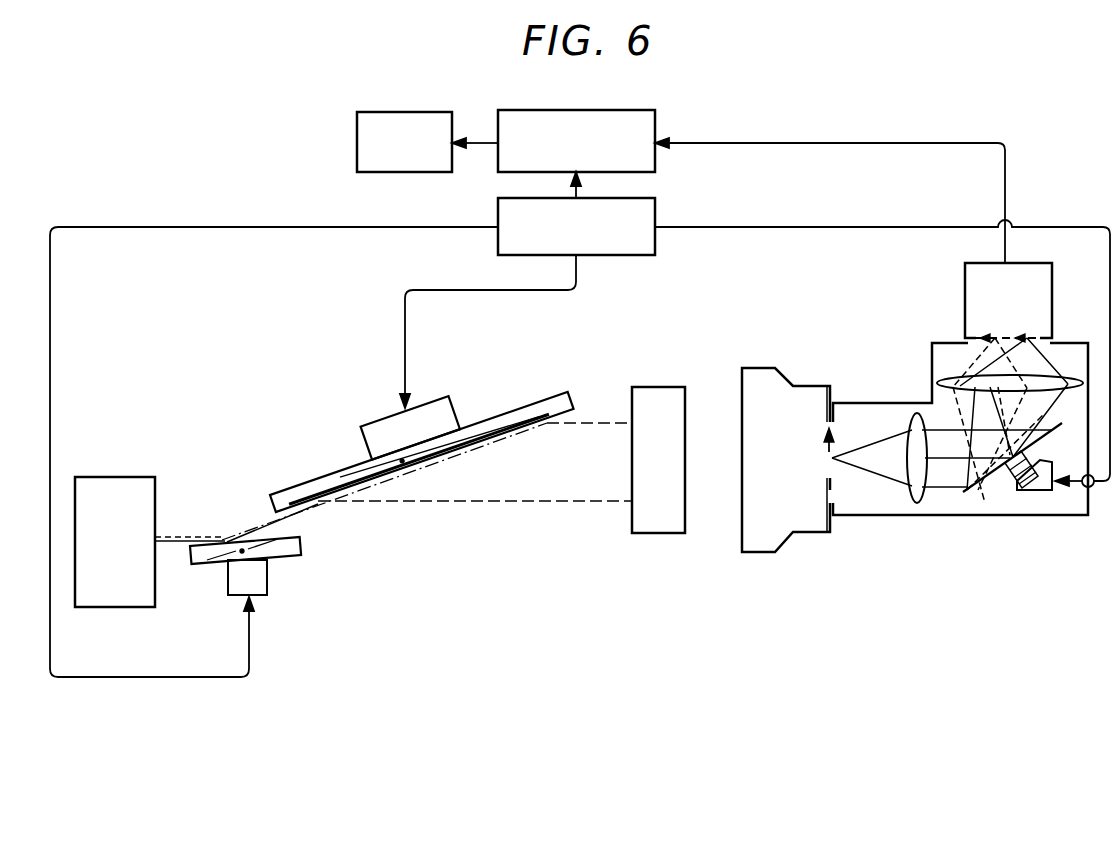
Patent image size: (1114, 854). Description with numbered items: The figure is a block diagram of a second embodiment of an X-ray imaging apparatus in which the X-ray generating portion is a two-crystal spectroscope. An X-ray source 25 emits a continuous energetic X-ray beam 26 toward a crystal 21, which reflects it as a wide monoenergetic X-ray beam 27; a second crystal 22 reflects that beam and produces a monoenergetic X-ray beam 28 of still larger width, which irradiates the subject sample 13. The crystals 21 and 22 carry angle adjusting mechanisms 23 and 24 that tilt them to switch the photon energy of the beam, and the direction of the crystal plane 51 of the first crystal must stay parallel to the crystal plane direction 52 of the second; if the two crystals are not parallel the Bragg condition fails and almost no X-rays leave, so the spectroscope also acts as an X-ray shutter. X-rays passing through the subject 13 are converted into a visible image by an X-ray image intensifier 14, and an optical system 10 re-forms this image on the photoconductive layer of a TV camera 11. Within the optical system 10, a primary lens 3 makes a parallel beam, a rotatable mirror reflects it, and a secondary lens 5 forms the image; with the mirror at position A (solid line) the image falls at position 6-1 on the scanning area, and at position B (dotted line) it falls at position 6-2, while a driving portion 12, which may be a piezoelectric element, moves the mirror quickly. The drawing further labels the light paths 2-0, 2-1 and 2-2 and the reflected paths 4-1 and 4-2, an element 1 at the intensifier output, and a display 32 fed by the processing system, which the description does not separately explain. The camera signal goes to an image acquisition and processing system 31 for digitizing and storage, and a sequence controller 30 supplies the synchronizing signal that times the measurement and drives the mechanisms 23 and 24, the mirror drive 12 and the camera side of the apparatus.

The slit / aperture 1 is at (831, 479).
The light beam entrance path 2-0 is at (865, 442).
The light beam path (first position) 2-1 is at (1052, 368).
The light beam path (second position) 2-2 is at (967, 368).
The primary lens 3 is at (912, 420).
The reflected light beam (first position) 4-1 is at (967, 490).
The reflected light beam (second position) 4-2 is at (985, 503).
The secondary lens 5 is at (940, 377).
The image position 6-1 is at (1028, 337).
The image position 6-2 is at (995, 336).
The optical system 10 is at (1042, 510).
The TV camera 11 is at (1047, 285).
The driving portion of the rotary mirror 12 is at (1047, 492).
The subject sample 13 is at (658, 533).
The X-ray image intensifier 14 is at (758, 552).
The crystal 21 is at (288, 553).
The crystal 22 is at (318, 483).
The angle adjusting mechanism 23 is at (262, 596).
The angle adjusting mechanism 24 is at (388, 423).
The X-ray source 25 is at (125, 608).
The continuous energetic X-ray beam 26 is at (180, 540).
The monoenergetic X-ray beam 27 is at (335, 510).
The monoenergetic X-ray beam 28 is at (475, 495).
The sequence controller 30 is at (637, 255).
The image acquisition and processing system 31 is at (643, 172).
The display 32 is at (420, 172).
The direction of the crystal plane 51 is at (217, 562).
The direction of the crystal plane 52 is at (460, 447).
The mirror position A is at (1019, 454).
The mirror position B is at (1011, 441).